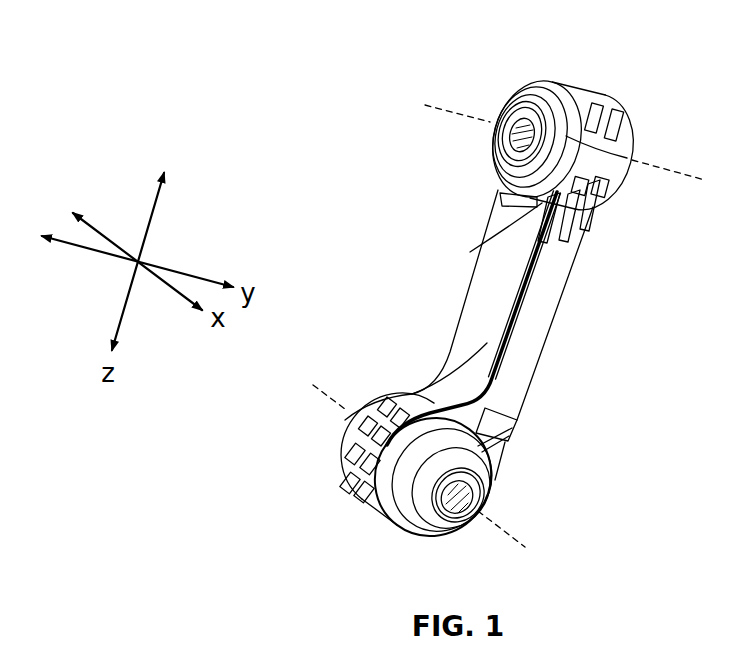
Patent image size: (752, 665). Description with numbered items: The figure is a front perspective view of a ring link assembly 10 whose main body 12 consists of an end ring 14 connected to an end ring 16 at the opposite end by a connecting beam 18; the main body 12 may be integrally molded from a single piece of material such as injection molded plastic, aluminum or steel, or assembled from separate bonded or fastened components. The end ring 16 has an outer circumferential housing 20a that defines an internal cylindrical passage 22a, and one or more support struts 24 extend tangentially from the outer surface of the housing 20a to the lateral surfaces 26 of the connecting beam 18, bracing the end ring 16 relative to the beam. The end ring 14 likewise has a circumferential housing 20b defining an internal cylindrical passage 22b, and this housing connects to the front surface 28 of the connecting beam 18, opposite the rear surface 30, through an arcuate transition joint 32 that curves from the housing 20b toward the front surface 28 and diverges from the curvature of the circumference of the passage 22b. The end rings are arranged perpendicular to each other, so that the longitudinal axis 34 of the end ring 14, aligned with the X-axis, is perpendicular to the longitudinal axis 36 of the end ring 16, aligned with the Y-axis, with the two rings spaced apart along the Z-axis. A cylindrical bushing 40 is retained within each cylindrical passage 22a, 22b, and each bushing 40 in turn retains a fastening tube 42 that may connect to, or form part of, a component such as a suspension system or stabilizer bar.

The ring link assembly 10 is at (340, 99).
The main body 12 is at (551, 328).
The end ring 14 is at (360, 510).
The end ring 16 is at (602, 92).
The connecting beam 18 is at (463, 310).
The outer circumferential housing 20a is at (567, 86).
The circumferential housing 20b is at (340, 468).
The internal cylindrical passage 22a is at (542, 81).
The internal cylindrical passage 22b is at (466, 452).
The support struts 24 is at (582, 217).
The lateral surfaces 26 is at (561, 272).
The front surface 28 is at (470, 342).
The rear surface 30 is at (542, 353).
The arcuate transition joint 32 is at (412, 397).
The longitudinal axis 34 is at (520, 541).
The longitudinal axis 36 is at (672, 166).
The cylindrical bushing 40 is at (503, 90).
The fastening tube 42 is at (507, 148).